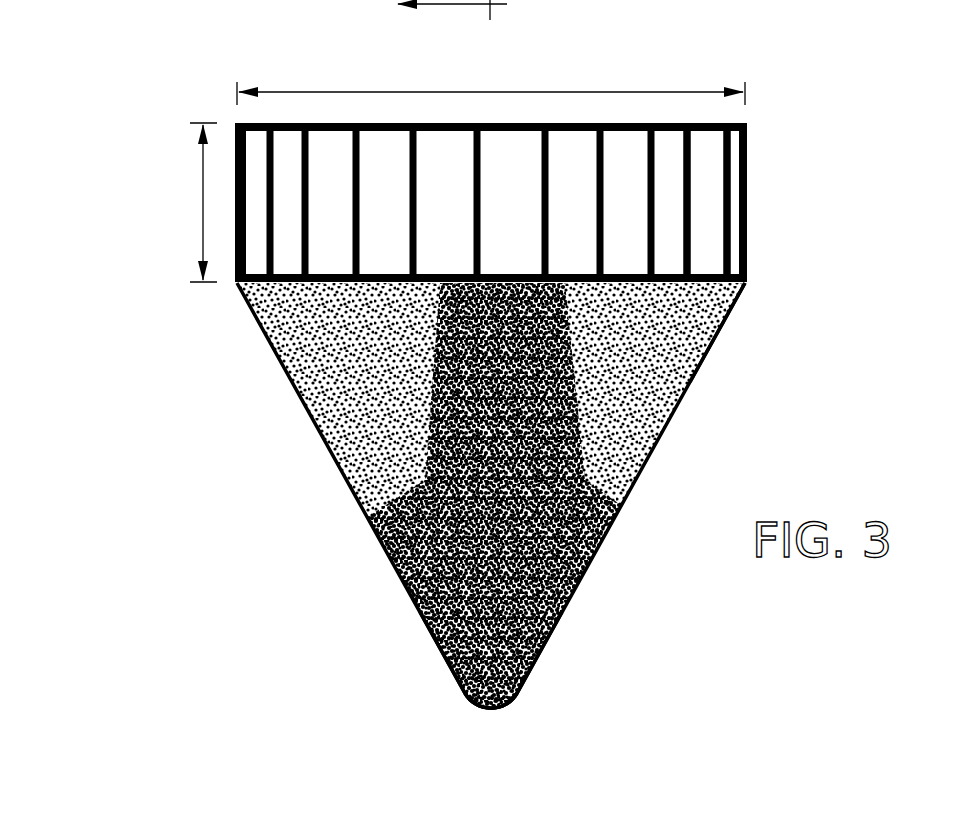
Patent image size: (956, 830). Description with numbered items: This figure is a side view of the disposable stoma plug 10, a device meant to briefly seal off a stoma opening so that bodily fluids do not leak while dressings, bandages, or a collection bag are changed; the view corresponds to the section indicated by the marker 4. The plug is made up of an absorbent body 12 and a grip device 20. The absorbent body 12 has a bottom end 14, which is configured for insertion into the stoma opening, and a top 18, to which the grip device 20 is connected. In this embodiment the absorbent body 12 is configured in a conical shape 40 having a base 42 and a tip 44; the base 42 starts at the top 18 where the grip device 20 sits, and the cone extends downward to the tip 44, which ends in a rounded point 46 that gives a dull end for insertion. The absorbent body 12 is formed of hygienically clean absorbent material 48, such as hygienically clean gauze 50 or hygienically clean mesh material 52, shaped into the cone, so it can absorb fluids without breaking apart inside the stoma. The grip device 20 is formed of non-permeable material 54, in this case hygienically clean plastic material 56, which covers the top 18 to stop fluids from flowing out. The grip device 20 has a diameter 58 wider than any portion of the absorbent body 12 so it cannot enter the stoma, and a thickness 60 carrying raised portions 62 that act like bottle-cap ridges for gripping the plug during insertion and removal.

The disposable stoma plug 10 is at (112, 50).
The section line 4 is at (464, 10).
The absorbent body 12 is at (205, 507).
The bottom end 14 is at (440, 683).
The top 18 is at (155, 296).
The grip device 20 is at (168, 202).
The conical shape 40 is at (620, 603).
The base 42 is at (708, 285).
The tip 44 is at (490, 708).
The rounded point 46 is at (478, 707).
The hygienically clean absorbent material 48 is at (541, 501).
The hygienically clean gauze 50 is at (541, 501).
The hygienically clean mesh material 52 is at (635, 418).
The non-permeable material 54 is at (790, 202).
The hygienically clean plastic material 56 is at (712, 200).
The diameter 58 is at (303, 88).
The thickness 60 is at (202, 178).
The raised portions 62 is at (237, 125).